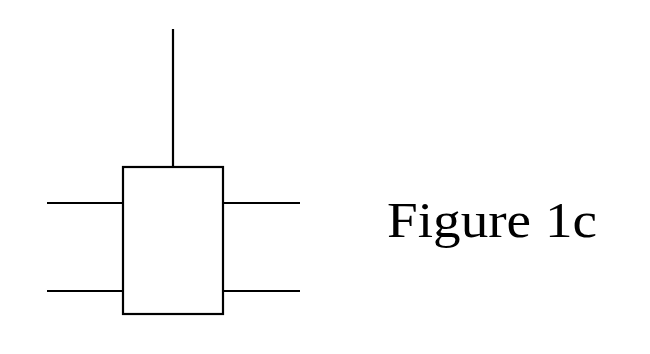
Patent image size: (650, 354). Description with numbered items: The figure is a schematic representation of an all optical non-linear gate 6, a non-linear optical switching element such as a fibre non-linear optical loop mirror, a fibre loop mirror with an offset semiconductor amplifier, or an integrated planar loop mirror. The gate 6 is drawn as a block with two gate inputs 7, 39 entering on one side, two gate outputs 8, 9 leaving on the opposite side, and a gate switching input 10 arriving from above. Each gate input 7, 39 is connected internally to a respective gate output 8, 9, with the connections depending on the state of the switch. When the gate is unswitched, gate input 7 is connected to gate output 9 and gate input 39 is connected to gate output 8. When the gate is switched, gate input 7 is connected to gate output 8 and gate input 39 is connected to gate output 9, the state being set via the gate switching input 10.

The gate switching input 10 is at (171, 166).
The all optical non-linear gate 6 is at (210, 166).
The gate input 39 is at (122, 205).
The gate output 8 is at (225, 201).
The gate input 7 is at (122, 293).
The gate output 9 is at (225, 294).